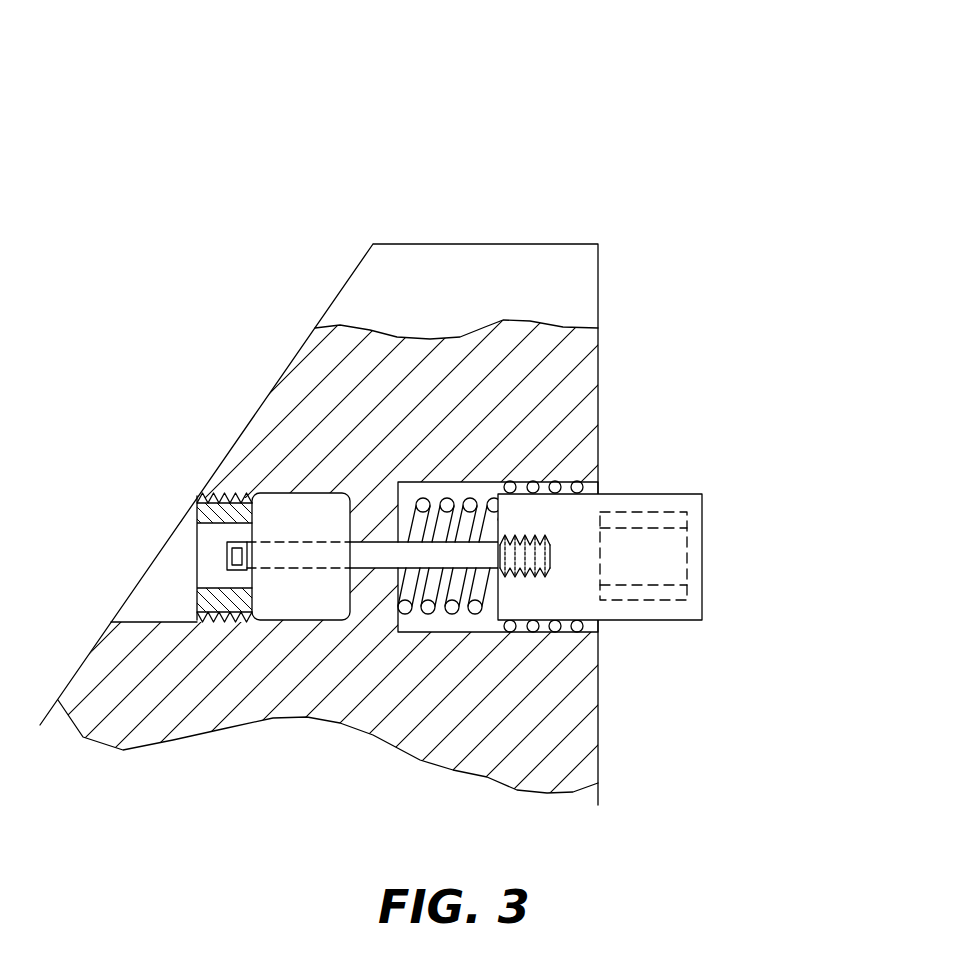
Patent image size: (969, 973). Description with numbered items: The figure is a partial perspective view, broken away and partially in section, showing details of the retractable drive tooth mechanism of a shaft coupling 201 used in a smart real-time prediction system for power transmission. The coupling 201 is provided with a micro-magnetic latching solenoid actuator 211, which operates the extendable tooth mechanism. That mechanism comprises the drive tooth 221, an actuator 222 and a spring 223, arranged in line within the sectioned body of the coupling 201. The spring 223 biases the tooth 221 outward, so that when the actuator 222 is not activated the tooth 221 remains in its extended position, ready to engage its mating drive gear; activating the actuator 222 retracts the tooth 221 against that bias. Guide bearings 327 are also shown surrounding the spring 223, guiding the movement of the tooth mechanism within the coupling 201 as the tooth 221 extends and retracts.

The shaft coupling 201 is at (205, 63).
The micro-magnetic latching solenoid actuator 211 is at (780, 523).
The drive tooth 221 is at (702, 583).
The actuator 222 is at (277, 493).
The spring 223 is at (455, 500).
The guide bearings 327 is at (596, 443).